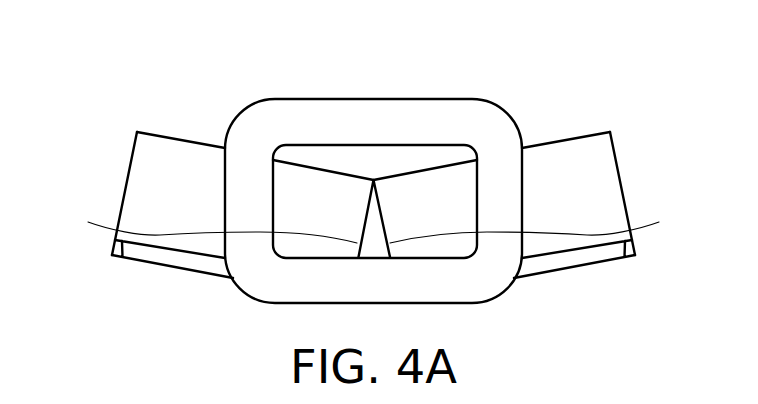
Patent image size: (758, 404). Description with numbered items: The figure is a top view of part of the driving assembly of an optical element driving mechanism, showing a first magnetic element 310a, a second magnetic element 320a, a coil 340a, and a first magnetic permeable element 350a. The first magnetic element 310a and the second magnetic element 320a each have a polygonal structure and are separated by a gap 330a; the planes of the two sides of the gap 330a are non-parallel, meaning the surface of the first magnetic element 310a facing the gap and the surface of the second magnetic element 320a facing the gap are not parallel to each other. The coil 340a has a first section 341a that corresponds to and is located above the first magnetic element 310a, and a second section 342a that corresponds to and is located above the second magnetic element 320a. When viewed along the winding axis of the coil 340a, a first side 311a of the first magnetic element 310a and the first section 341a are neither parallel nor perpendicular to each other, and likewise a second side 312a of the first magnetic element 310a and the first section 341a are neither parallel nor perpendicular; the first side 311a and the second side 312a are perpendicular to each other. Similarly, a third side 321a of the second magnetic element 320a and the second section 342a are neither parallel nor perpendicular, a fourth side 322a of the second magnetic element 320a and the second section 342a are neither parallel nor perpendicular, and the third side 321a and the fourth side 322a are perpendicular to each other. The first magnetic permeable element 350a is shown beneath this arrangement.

The first magnetic element 310a is at (189, 133).
The first side 311a is at (189, 224).
The second side 312a is at (208, 147).
The second magnetic element 320a is at (559, 134).
The third side 321a is at (559, 224).
The fourth side 322a is at (540, 143).
The gap 330a is at (372, 220).
The coil 340a is at (393, 115).
The first section 341a is at (243, 210).
The second section 342a is at (504, 210).
The first magnetic permeable element 350a is at (182, 270).